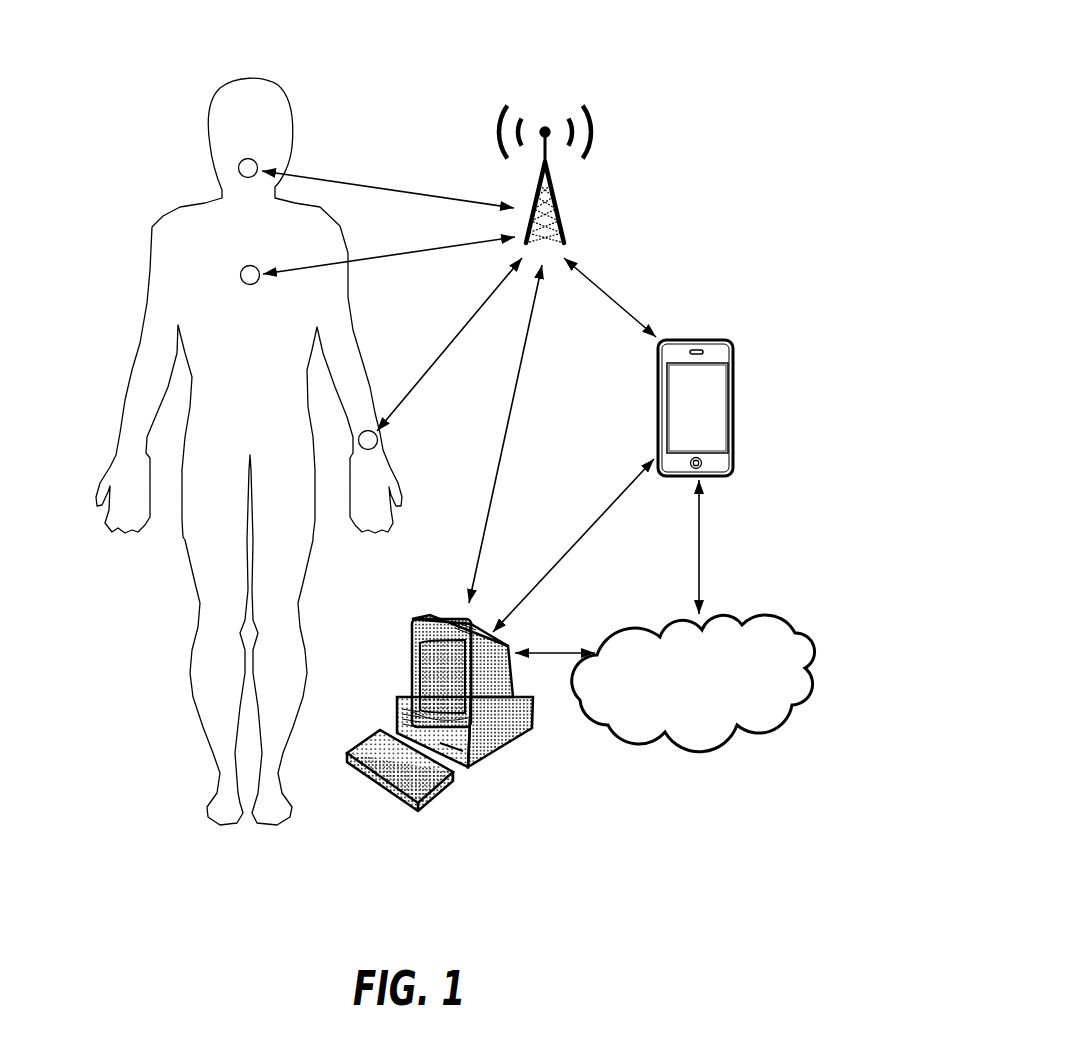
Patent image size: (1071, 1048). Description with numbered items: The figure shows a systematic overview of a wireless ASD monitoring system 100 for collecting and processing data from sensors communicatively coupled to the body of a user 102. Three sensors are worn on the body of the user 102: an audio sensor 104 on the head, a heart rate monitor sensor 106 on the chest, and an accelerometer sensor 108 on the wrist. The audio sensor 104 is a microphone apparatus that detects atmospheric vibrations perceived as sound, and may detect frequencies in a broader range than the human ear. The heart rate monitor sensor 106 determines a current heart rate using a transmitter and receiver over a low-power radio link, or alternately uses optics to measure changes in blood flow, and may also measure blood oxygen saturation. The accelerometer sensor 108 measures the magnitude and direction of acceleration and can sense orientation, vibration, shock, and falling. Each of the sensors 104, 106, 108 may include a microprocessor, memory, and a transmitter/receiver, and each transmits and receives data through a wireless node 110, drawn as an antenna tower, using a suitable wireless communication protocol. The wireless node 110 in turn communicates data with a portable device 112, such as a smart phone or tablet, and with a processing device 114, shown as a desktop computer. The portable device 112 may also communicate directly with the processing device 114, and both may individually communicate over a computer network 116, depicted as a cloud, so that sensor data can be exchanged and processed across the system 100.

The system 100 is at (695, 71).
The user 102 is at (153, 231).
The audio sensor 104 is at (247, 158).
The heart rate monitor sensor 106 is at (242, 268).
The accelerometer sensor 108 is at (378, 445).
The wireless node 110 is at (560, 202).
The portable device 112 is at (708, 339).
The processing device 114 is at (500, 752).
The computer network 116 is at (693, 683).